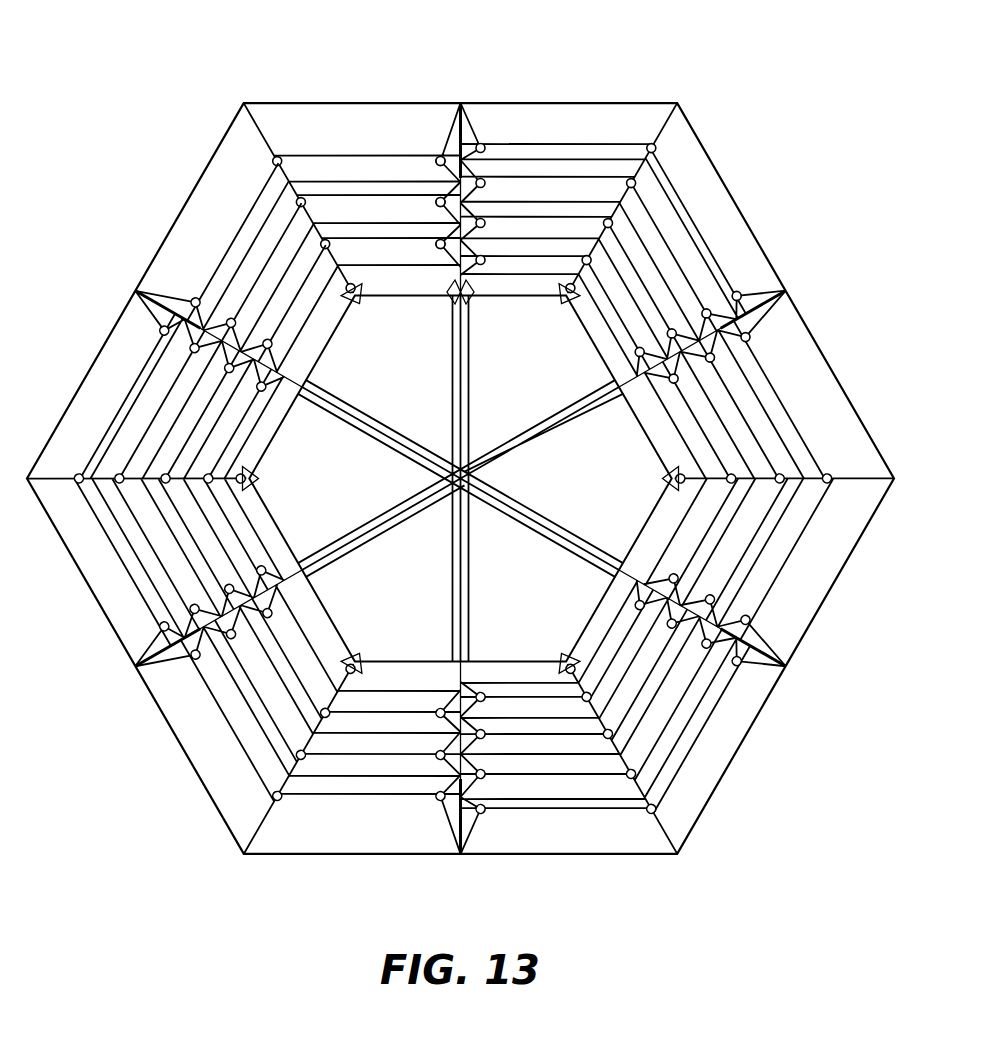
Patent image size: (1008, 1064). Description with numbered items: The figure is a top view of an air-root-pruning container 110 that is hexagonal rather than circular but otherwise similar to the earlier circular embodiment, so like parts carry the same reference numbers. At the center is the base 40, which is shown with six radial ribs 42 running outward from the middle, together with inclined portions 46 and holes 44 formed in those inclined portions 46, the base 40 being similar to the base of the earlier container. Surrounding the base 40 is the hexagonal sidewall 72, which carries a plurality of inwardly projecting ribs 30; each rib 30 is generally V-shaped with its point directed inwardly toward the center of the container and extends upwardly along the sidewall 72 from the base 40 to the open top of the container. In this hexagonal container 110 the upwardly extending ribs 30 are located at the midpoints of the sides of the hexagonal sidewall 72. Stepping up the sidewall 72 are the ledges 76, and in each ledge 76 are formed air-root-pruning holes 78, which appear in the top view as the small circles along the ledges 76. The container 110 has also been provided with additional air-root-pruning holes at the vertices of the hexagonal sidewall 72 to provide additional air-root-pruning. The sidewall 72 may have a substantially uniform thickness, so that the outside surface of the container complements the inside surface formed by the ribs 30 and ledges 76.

The air-root-pruning container 110 is at (188, 54).
The rib 30 is at (460, 105).
The base 40 is at (539, 591).
The radial rib 42 is at (570, 422).
The hole 44 is at (472, 300).
The inclined portion 46 is at (452, 302).
The sidewall 72 is at (706, 190).
The ledge 76 is at (310, 297).
The air-root-pruning hole 78 is at (440, 241).